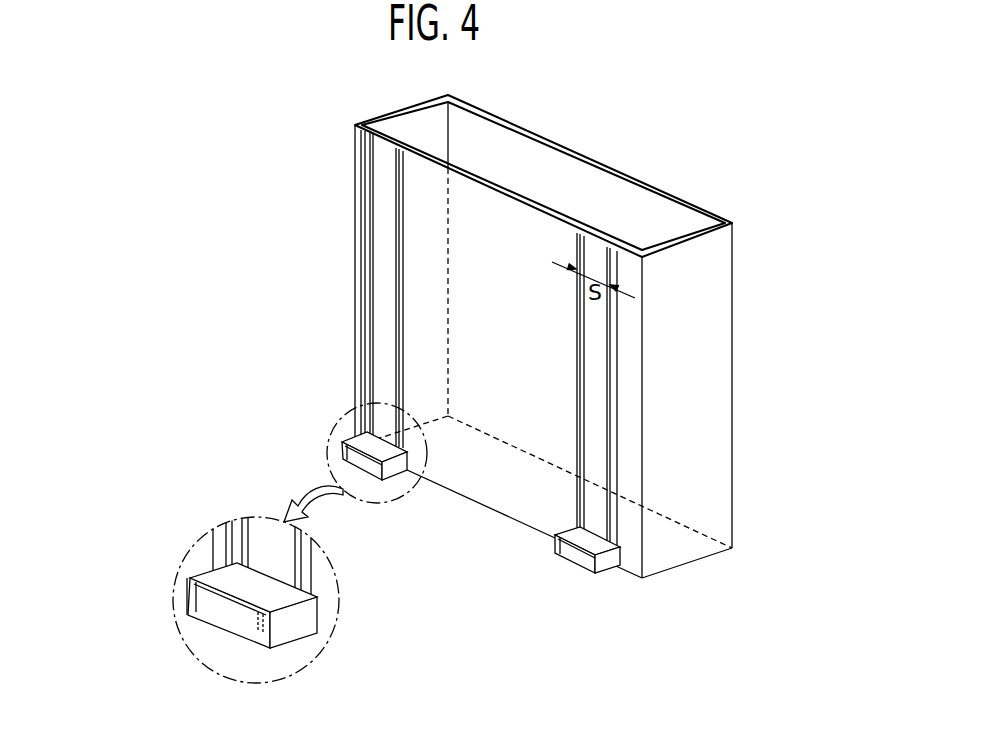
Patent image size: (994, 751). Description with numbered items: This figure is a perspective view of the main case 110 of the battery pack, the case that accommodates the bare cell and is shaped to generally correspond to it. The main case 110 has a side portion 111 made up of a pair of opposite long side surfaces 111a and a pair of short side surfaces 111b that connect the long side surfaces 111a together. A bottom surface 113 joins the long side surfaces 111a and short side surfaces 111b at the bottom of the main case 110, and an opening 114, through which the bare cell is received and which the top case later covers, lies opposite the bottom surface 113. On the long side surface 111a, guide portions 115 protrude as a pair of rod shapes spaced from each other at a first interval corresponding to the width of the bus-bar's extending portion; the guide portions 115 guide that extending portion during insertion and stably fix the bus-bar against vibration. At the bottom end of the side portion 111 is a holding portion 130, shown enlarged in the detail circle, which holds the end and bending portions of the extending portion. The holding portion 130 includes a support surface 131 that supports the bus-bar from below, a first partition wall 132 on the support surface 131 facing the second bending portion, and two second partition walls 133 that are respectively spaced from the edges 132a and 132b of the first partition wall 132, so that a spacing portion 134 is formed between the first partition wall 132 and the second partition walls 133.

The main case 110 is at (718, 113).
The side portion 111 is at (603, 351).
The long side surface 111a is at (528, 297).
The short side surface 111b is at (717, 355).
The bottom surface 113 is at (501, 500).
The opening 114 is at (592, 190).
The guide portions 115 is at (397, 320).
The holding portion 130 is at (328, 573).
The support surface 131 is at (232, 620).
The first partition wall 132 is at (258, 630).
The edge of first partition wall 132a is at (259, 632).
The edge of first partition wall 132b is at (222, 624).
The second partition wall 133 is at (218, 572).
The spacing portion 134 is at (193, 585).